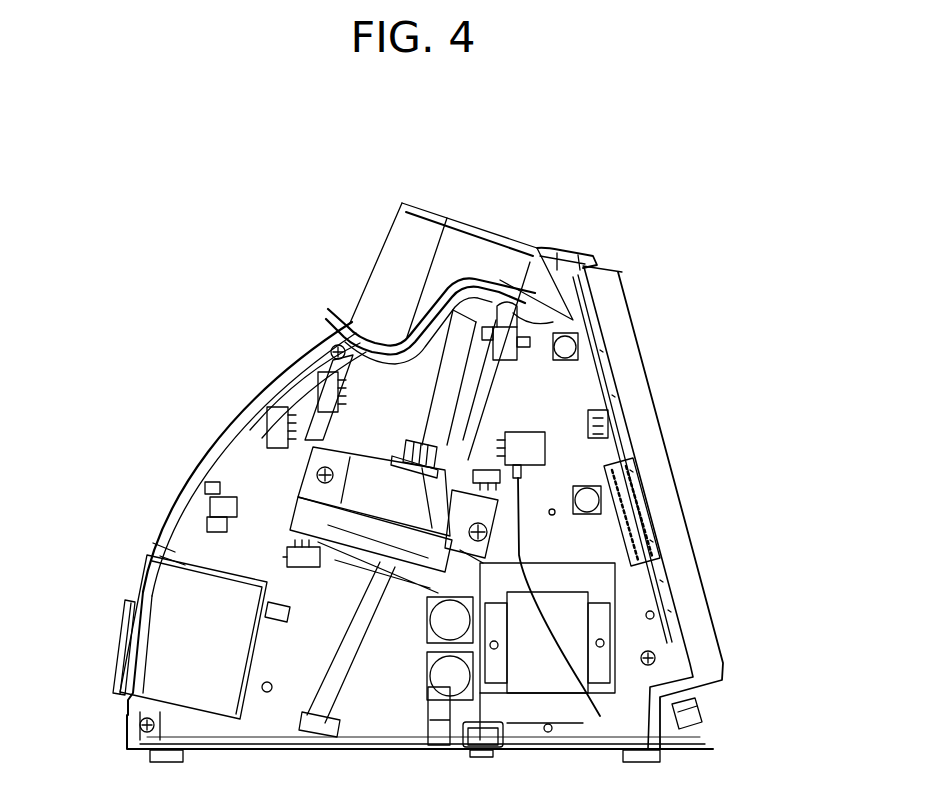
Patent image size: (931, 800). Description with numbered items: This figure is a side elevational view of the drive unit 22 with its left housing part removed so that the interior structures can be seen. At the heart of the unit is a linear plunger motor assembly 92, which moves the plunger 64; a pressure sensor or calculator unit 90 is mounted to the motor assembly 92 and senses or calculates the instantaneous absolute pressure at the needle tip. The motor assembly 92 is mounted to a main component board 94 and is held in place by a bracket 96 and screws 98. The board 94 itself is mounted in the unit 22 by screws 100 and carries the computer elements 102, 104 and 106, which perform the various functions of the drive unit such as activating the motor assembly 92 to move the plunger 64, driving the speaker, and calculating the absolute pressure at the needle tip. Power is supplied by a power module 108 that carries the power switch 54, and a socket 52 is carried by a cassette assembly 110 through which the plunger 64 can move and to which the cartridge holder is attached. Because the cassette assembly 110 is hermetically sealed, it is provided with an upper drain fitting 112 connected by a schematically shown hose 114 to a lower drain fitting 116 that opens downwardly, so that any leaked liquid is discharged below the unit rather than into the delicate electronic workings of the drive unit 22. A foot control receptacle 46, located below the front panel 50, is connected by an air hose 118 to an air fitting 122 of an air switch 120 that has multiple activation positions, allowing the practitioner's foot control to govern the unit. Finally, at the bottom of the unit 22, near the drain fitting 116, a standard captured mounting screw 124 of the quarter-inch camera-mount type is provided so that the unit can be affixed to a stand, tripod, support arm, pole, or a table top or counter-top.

The drive unit 22 is at (297, 343).
The foot control receptacle 46 is at (700, 711).
The front panel 50 is at (615, 268).
The socket 52 is at (492, 236).
The power switch 54 is at (120, 630).
The plunger 64 is at (407, 343).
The pressure sensor or calculator unit 90 is at (302, 538).
The linear plunger motor assembly 92 is at (400, 440).
The main component board 94 is at (247, 480).
The bracket 96 is at (322, 432).
The screws 98 is at (500, 533).
The screws 100 is at (143, 730).
The computer element 102 is at (267, 430).
The computer element 104 is at (330, 392).
The computer element 106 is at (642, 482).
The power module 108 is at (177, 642).
The cassette assembly 110 is at (392, 218).
The upper drain fitting 112 is at (523, 355).
The hose 114 is at (495, 402).
The lower drain fitting 116 is at (440, 735).
The air hose 118 is at (548, 630).
The air switch 120 is at (547, 437).
The air fitting 122 is at (532, 470).
The captured mounting screw 124 is at (505, 748).